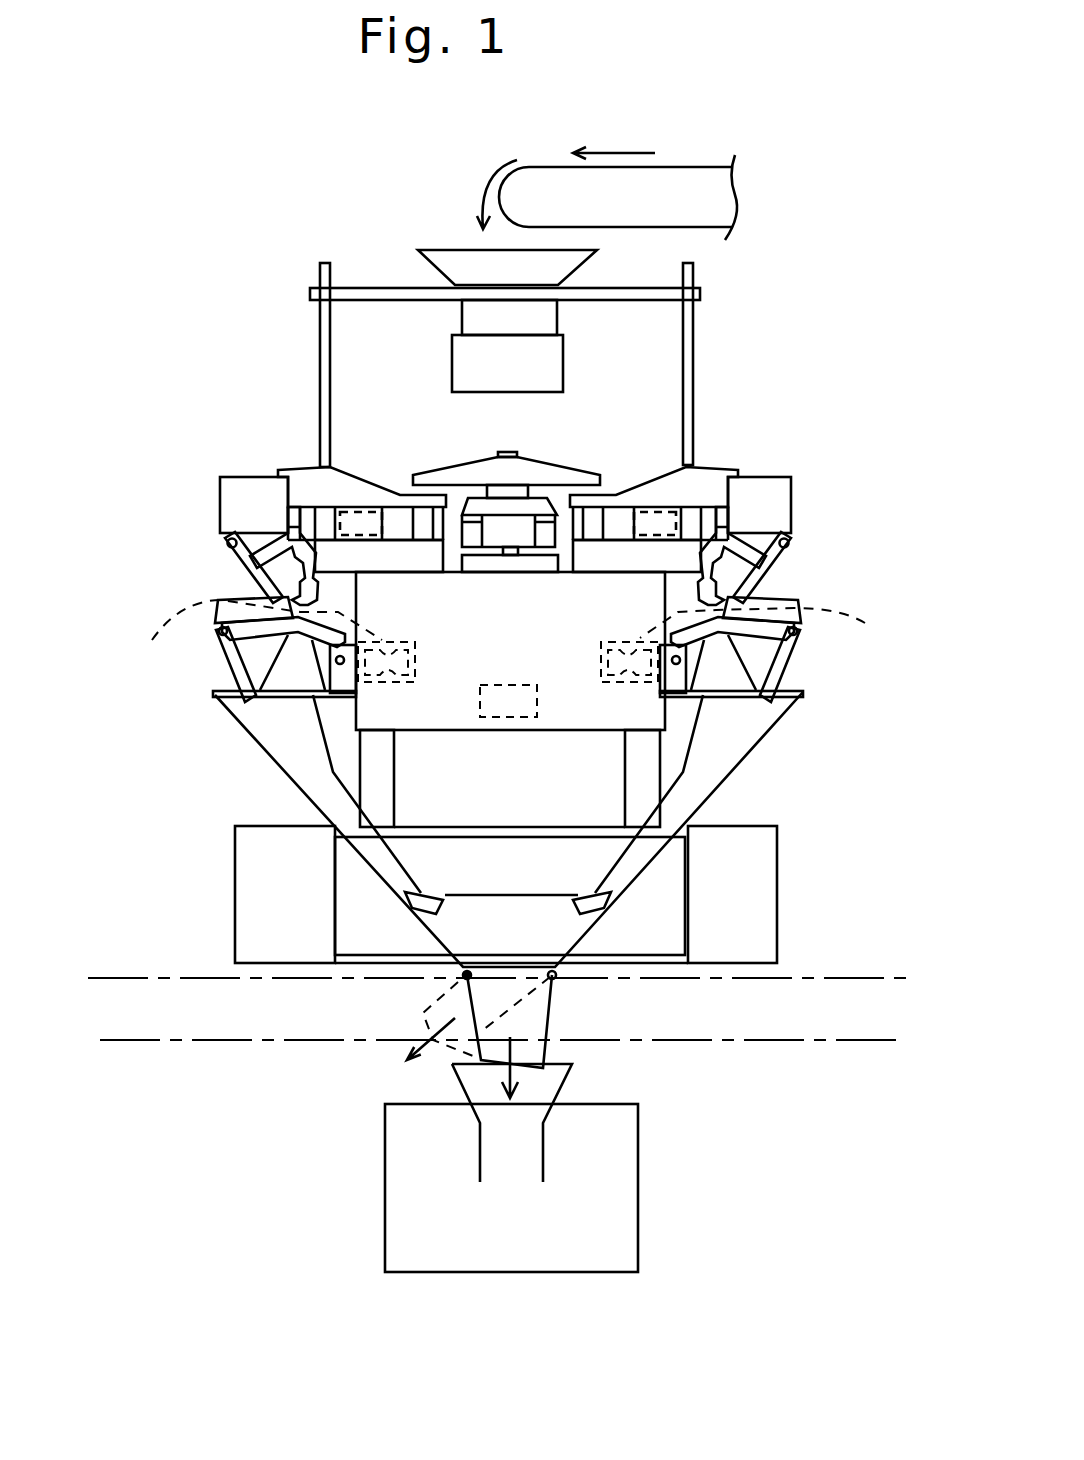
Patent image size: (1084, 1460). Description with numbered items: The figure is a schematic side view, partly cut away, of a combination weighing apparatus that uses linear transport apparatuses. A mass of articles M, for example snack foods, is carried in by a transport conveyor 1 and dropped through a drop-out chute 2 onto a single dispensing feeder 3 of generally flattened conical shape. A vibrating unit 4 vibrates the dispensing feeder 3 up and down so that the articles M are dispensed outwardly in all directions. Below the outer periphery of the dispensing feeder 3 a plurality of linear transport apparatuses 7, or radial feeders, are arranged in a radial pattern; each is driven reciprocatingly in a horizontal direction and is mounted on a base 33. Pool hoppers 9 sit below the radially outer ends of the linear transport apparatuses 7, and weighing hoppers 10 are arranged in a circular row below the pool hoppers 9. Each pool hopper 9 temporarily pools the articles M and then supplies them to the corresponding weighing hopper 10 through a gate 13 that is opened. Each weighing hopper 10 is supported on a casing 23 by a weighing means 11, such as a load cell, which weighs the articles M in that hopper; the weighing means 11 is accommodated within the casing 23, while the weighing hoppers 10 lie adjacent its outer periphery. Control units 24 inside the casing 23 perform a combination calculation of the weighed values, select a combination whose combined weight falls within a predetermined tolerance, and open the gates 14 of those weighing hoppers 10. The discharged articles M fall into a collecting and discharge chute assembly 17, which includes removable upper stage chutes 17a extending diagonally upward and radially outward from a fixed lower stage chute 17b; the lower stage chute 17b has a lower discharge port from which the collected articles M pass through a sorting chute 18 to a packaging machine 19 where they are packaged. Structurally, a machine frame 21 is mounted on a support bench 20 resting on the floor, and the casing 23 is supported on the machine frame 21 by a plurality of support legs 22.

The transport conveyor 1 is at (693, 167).
The drop-out chute 2 is at (446, 250).
The dispensing feeder 3 is at (543, 463).
The vibrating unit 4 is at (482, 508).
The linear transport apparatus 7 is at (722, 465).
The pool hopper 9 is at (773, 502).
The weighing hopper 10 is at (798, 592).
The weighing means 11 is at (509, 632).
The gate 13 is at (787, 548).
The gate 14 is at (788, 668).
The collecting and discharge chute assembly 17 is at (759, 768).
The upper stage chute 17a is at (308, 795).
The lower stage chute 17b is at (425, 937).
The sorting chute 18 is at (547, 1010).
The packaging machine 19 is at (638, 1160).
The support bench 20 is at (850, 968).
The machine frame 21 is at (780, 884).
The support leg 22 is at (650, 787).
The casing 23 is at (445, 712).
The control unit 24 is at (514, 712).
The base 33 is at (585, 598).
The articles M is at (513, 1070).